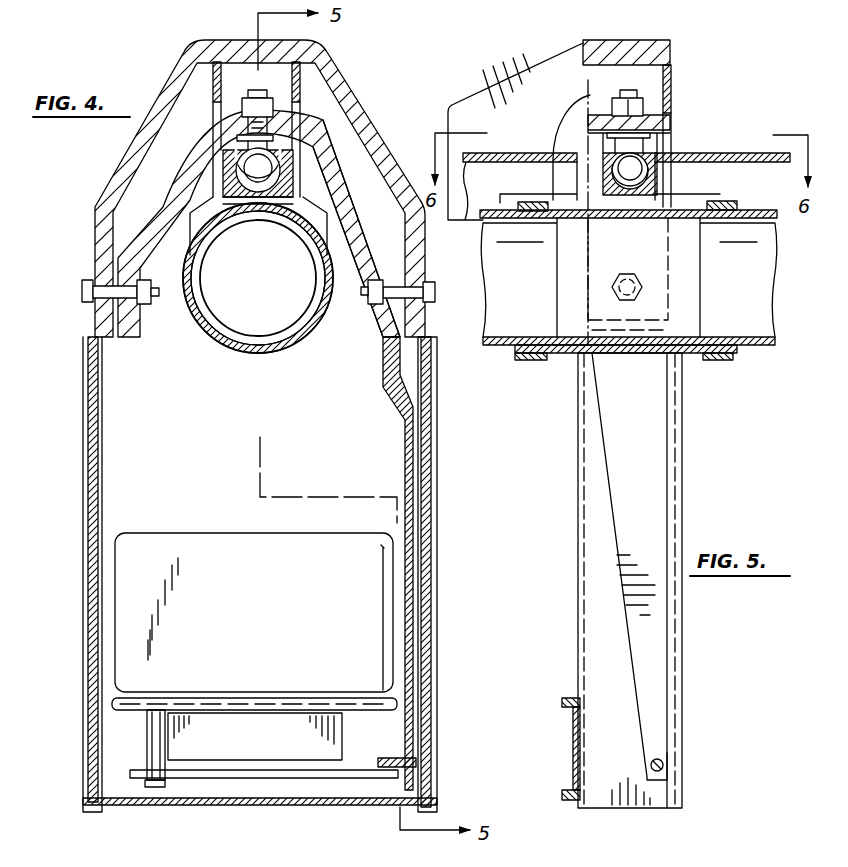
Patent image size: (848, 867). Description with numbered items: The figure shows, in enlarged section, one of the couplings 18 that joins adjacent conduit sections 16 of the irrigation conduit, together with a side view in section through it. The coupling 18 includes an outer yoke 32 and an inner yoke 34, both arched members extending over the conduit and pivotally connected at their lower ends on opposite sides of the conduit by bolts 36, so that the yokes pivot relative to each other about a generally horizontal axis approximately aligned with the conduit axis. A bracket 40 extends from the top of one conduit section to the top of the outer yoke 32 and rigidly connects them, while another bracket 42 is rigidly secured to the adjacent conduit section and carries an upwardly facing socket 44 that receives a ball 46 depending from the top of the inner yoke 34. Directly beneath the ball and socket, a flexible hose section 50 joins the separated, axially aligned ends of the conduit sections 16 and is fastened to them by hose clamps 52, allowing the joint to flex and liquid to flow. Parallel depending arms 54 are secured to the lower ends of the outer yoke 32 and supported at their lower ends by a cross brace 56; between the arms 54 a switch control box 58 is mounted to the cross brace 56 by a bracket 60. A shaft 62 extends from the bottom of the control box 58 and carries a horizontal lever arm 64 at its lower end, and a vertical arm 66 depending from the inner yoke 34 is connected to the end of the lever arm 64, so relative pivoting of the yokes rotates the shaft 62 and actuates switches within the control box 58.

In FIG. 4, the conduit section 16 is at (218, 323).
In FIG. 5, the conduit section 16 is at (480, 347).
In FIG. 4, the coupling 18 is at (413, 72).
In FIG. 4, the outer yoke 32 is at (357, 107).
In FIG. 5, the outer yoke 32 is at (670, 50).
In FIG. 4, the inner yoke 34 is at (367, 237).
In FIG. 5, the inner yoke 34 is at (670, 117).
In FIG. 4, the bolt 36 is at (85, 297).
In FIG. 5, the bolt 36 is at (657, 253).
In FIG. 4, the bracket 40 is at (303, 78).
In FIG. 5, the bracket 40 is at (560, 57).
In FIG. 4, the bracket 42 is at (230, 175).
In FIG. 5, the bracket 42 is at (738, 153).
In FIG. 4, the socket 44 is at (213, 121).
In FIG. 5, the socket 44 is at (605, 197).
In FIG. 4, the ball 46 is at (262, 160).
In FIG. 5, the ball 46 is at (638, 160).
In FIG. 4, the flexible hose section 50 is at (252, 348).
In FIG. 5, the flexible hose section 50 is at (563, 360).
In FIG. 5, the hose clamp 52 is at (525, 362).
In FIG. 4, the depending arm 54 is at (103, 470).
In FIG. 5, the depending arm 54 is at (593, 595).
In FIG. 4, the cross brace 56 is at (268, 793).
In FIG. 5, the cross brace 56 is at (573, 702).
In FIG. 4, the switch control box 58 is at (266, 630).
In FIG. 4, the bracket 60 is at (338, 748).
In FIG. 4, the shaft 62 is at (153, 762).
In FIG. 4, the lever arm 64 is at (342, 772).
In FIG. 5, the lever arm 64 is at (662, 765).
In FIG. 4, the vertical arm 66 is at (405, 432).
In FIG. 5, the vertical arm 66 is at (660, 495).